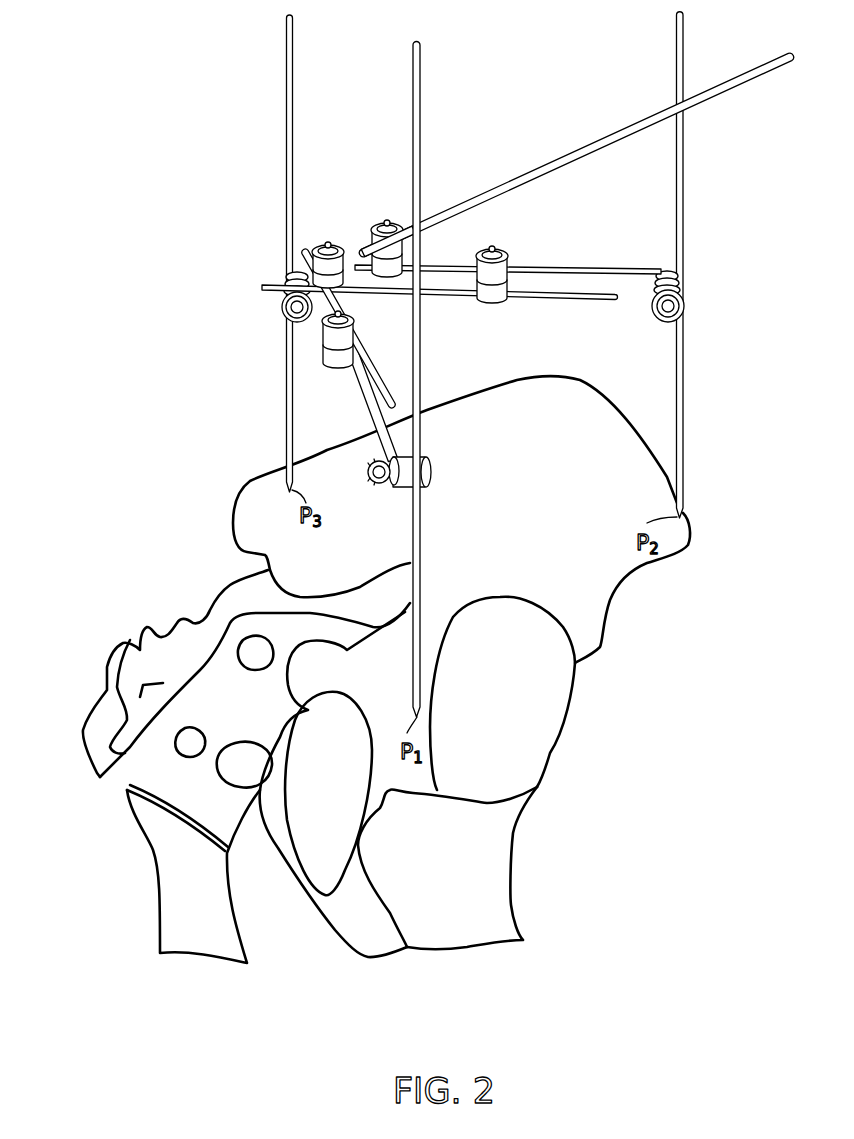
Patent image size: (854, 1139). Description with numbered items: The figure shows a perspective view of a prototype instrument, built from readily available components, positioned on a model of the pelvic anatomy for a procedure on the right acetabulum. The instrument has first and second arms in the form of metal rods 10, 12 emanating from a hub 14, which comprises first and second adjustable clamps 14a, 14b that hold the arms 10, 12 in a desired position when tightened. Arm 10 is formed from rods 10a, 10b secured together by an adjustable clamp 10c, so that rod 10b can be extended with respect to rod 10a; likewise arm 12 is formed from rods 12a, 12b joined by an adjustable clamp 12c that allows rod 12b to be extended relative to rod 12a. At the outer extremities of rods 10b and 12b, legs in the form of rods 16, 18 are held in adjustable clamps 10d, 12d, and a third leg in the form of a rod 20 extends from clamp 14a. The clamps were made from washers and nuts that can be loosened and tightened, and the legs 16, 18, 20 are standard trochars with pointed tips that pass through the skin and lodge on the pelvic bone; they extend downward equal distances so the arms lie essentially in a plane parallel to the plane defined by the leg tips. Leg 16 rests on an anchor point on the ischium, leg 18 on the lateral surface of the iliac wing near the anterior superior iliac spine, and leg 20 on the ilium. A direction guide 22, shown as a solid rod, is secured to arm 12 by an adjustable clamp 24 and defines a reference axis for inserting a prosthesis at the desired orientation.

The first arm 10 is at (361, 368).
The rod 10a is at (383, 373).
The rod 10b is at (370, 417).
The adjustable clamp 10c is at (320, 348).
The adjustable clamp 10d is at (428, 470).
The second arm 12 is at (476, 294).
The rod 12a is at (583, 302).
The rod 12b is at (613, 271).
The adjustable clamp 12c is at (541, 302).
The adjustable clamp 12d is at (688, 304).
The hub 14 is at (349, 228).
The first adjustable clamp 14a is at (280, 302).
The second adjustable clamp 14b is at (325, 238).
The first leg 16 is at (422, 598).
The second leg 18 is at (683, 458).
The third leg 20 is at (283, 443).
The direction guide 22 is at (591, 143).
The adjustable clamp 24 is at (400, 218).